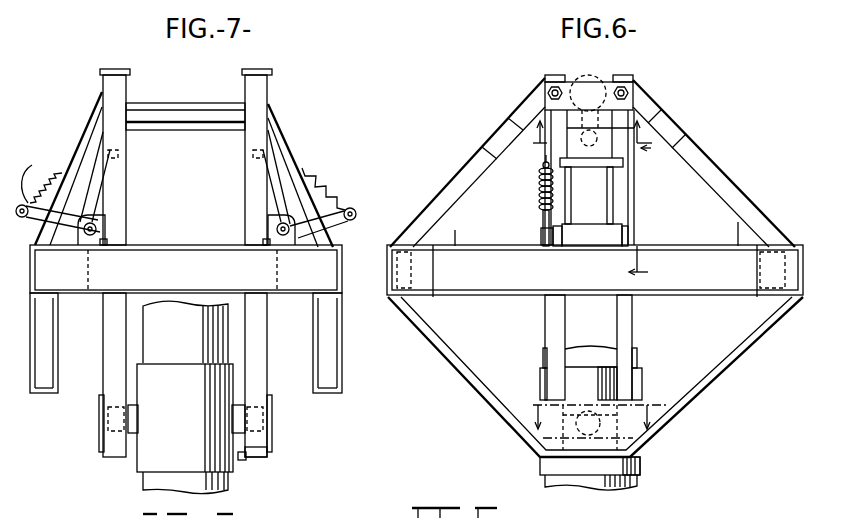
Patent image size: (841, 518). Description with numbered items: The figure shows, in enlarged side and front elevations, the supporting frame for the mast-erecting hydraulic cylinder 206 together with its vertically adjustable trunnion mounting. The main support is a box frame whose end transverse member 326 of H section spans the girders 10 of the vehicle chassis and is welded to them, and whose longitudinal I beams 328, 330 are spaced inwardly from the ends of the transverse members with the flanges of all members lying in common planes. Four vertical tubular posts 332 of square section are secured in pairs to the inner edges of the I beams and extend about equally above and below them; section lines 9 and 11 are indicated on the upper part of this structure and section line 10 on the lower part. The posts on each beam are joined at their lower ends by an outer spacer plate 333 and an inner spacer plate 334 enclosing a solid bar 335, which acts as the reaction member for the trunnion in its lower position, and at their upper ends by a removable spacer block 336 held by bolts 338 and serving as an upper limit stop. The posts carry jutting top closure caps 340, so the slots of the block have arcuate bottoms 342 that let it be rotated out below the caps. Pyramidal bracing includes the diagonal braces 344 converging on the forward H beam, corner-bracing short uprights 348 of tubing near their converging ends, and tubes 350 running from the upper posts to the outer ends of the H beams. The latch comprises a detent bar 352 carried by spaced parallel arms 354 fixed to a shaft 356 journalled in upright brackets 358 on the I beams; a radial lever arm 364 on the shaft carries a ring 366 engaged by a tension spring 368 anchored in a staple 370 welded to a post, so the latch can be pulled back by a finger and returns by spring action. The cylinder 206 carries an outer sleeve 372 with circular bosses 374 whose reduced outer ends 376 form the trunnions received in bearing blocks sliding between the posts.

In FIG. 6, the section line 9- 9 is at (592, 130).
In FIG. 7, the girders 10 is at (58, 358).
In FIG. 6, the girders 10 is at (598, 427).
In FIG. 6, the section line 11- 11 is at (652, 214).
In FIG. 7, the hydraulic cylinder 206 is at (182, 348).
In FIG. 7, the end transverse member 326 is at (162, 283).
In FIG. 6, the end transverse member 326 is at (396, 298).
In FIG. 7, the longitudinal I beam 328 is at (86, 282).
In FIG. 7, the longitudinal I beam 330 is at (284, 257).
In FIG. 6, the longitudinal I beam 330 is at (700, 288).
In FIG. 6, the vertical tubular post 332 is at (560, 335).
In FIG. 7, the outer spacer plate 333 is at (100, 400).
In FIG. 6, the outer spacer plate 333 is at (540, 396).
In FIG. 7, the inner spacer plate 334 is at (246, 458).
In FIG. 6, the inner spacer plate 334 is at (538, 452).
In FIG. 7, the solid bar 335 is at (272, 456).
In FIG. 6, the solid bar 335 is at (645, 470).
In FIG. 6, the spacer block 336 is at (590, 82).
In FIG. 6, the bolts 338 is at (548, 93).
In FIG. 7, the top closure cap 340 is at (108, 68).
In FIG. 6, the top closure cap 340 is at (545, 74).
In FIG. 6, the arcuate bottom 342 is at (595, 407).
In FIG. 7, the diagonal brace 344 is at (251, 162).
In FIG. 6, the short upright 348 is at (440, 230).
In FIG. 7, the tube 350 is at (96, 118).
In FIG. 6, the tube 350 is at (486, 152).
In FIG. 7, the detent bar 352 is at (118, 155).
In FIG. 6, the detent bar 352 is at (637, 167).
In FIG. 7, the arms 354 is at (100, 186).
In FIG. 6, the arms 354 is at (589, 195).
In FIG. 7, the shaft 356 is at (96, 227).
In FIG. 6, the shaft 356 is at (633, 229).
In FIG. 7, the upright bracket 358 is at (104, 245).
In FIG. 6, the upright bracket 358 is at (580, 248).
In FIG. 7, the radial lever arm 364 is at (364, 190).
In FIG. 6, the radial lever arm 364 is at (543, 228).
In FIG. 7, the ring 366 is at (58, 160).
In FIG. 7, the tension spring 368 is at (58, 168).
In FIG. 6, the tension spring 368 is at (538, 192).
In FIG. 6, the staple 370 is at (544, 166).
In FIG. 7, the outer sleeve 372 is at (145, 450).
In FIG. 7, the circular boss 374 is at (138, 418).
In FIG. 7, the reduced outer end 376 is at (275, 412).
In FIG. 6, the reduced outer end 376 is at (593, 255).